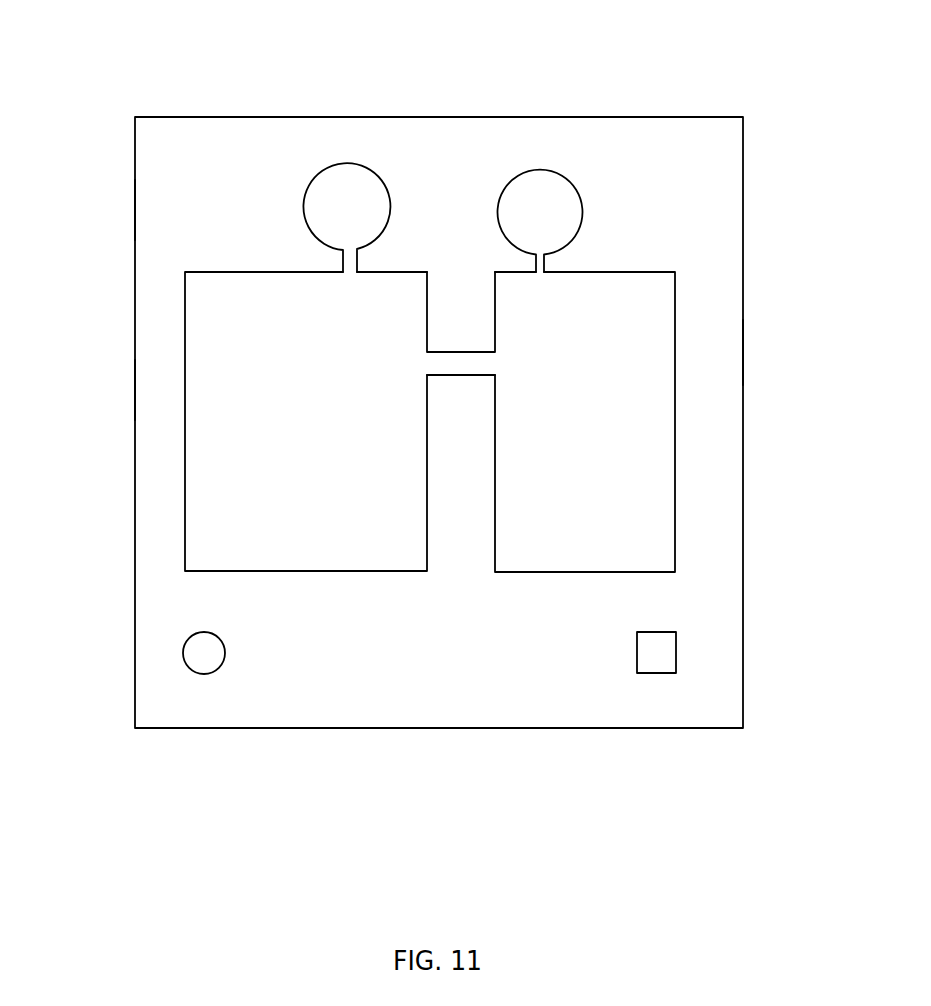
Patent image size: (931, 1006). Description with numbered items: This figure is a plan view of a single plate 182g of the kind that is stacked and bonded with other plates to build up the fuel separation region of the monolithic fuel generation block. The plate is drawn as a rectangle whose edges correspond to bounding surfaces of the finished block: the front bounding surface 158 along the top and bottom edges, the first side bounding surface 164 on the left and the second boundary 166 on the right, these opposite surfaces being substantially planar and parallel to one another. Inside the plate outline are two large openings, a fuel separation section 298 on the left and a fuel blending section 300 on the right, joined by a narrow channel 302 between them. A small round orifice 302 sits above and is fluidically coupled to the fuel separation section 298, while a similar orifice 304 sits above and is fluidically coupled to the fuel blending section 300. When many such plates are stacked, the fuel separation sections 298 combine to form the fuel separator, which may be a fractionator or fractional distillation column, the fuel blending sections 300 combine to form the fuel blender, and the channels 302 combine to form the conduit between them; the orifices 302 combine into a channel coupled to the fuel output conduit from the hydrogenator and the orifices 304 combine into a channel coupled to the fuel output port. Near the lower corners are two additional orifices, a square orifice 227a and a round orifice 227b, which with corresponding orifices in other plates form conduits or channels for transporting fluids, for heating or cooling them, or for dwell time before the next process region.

The front bounding surface 158 is at (385, 117).
The plate 182g is at (135, 210).
The first side bounding surface 164 is at (135, 390).
The second boundary 166 is at (743, 352).
The fuel separation section 298 is at (343, 427).
The fuel blending section 300 is at (608, 428).
The channel / orifice 302 is at (370, 221).
The orifice 304 is at (563, 229).
The additional orifice 227a is at (640, 650).
The additional orifice 227b is at (208, 662).